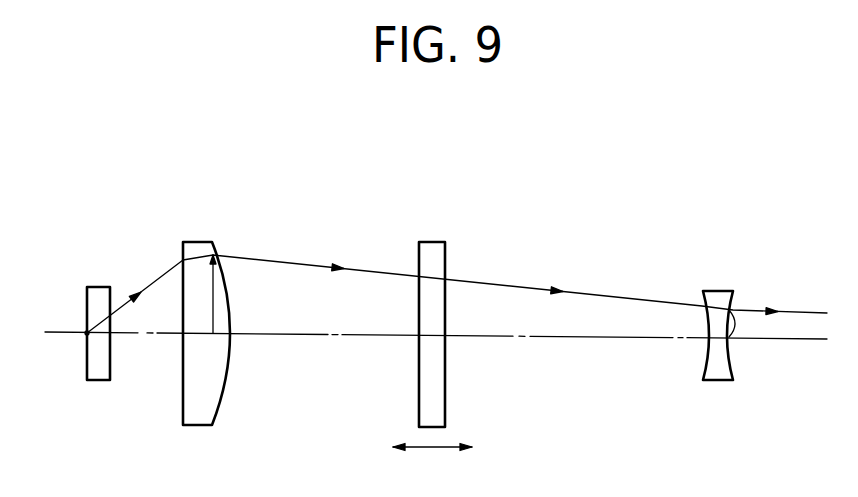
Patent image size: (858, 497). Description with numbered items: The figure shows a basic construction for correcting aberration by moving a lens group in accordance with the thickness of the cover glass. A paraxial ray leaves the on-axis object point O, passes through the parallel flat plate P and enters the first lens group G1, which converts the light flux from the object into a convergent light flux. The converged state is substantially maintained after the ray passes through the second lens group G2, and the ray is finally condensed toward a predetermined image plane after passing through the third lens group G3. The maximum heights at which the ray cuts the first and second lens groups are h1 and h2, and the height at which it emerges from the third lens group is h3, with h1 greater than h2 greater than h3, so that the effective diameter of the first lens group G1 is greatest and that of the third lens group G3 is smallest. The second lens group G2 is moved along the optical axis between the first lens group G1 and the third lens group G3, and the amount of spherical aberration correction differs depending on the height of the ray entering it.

The parallel flat plate P is at (96, 287).
The on-axis object point O is at (87, 333).
The first lens group G1 is at (195, 242).
The second lens group G2 is at (432, 242).
The third lens group G3 is at (717, 291).
The maximum height of paraxial ray at first lens group h1 is at (212, 333).
The maximum height of paraxial ray at second lens group h2 is at (418, 334).
The height of paraxial ray emerging from third lens group h3 is at (745, 324).